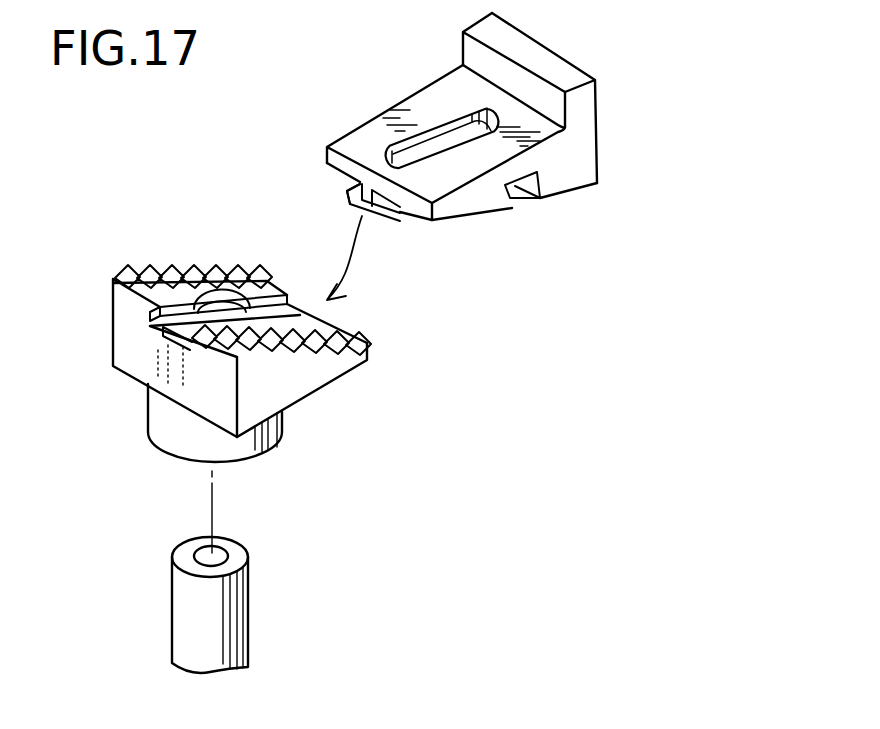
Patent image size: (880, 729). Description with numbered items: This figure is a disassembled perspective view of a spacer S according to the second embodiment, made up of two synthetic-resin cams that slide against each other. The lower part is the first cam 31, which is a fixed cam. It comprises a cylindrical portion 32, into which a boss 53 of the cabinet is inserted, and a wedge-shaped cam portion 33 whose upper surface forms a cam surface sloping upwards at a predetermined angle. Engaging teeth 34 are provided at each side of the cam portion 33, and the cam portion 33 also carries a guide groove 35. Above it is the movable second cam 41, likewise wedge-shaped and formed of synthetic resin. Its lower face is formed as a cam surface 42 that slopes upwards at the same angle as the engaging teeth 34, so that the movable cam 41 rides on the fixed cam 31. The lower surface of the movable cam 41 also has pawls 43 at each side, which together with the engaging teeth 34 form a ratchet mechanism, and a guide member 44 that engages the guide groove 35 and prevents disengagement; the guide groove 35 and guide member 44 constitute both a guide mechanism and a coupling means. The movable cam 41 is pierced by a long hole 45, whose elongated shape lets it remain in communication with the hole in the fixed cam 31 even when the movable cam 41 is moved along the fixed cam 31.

The first cam 31 is at (100, 402).
The cylindrical portion 32 is at (165, 432).
The cam portion 33 is at (307, 383).
The engaging teeth 34 is at (178, 277).
The guide groove 35 is at (157, 330).
The second cam 41 is at (632, 150).
The cam surface 42 is at (335, 170).
The pawls 43 is at (513, 206).
The guide member 44 is at (357, 201).
The long hole 45 is at (437, 137).
The boss 53 is at (230, 625).
The jaw assembly S is at (537, 313).